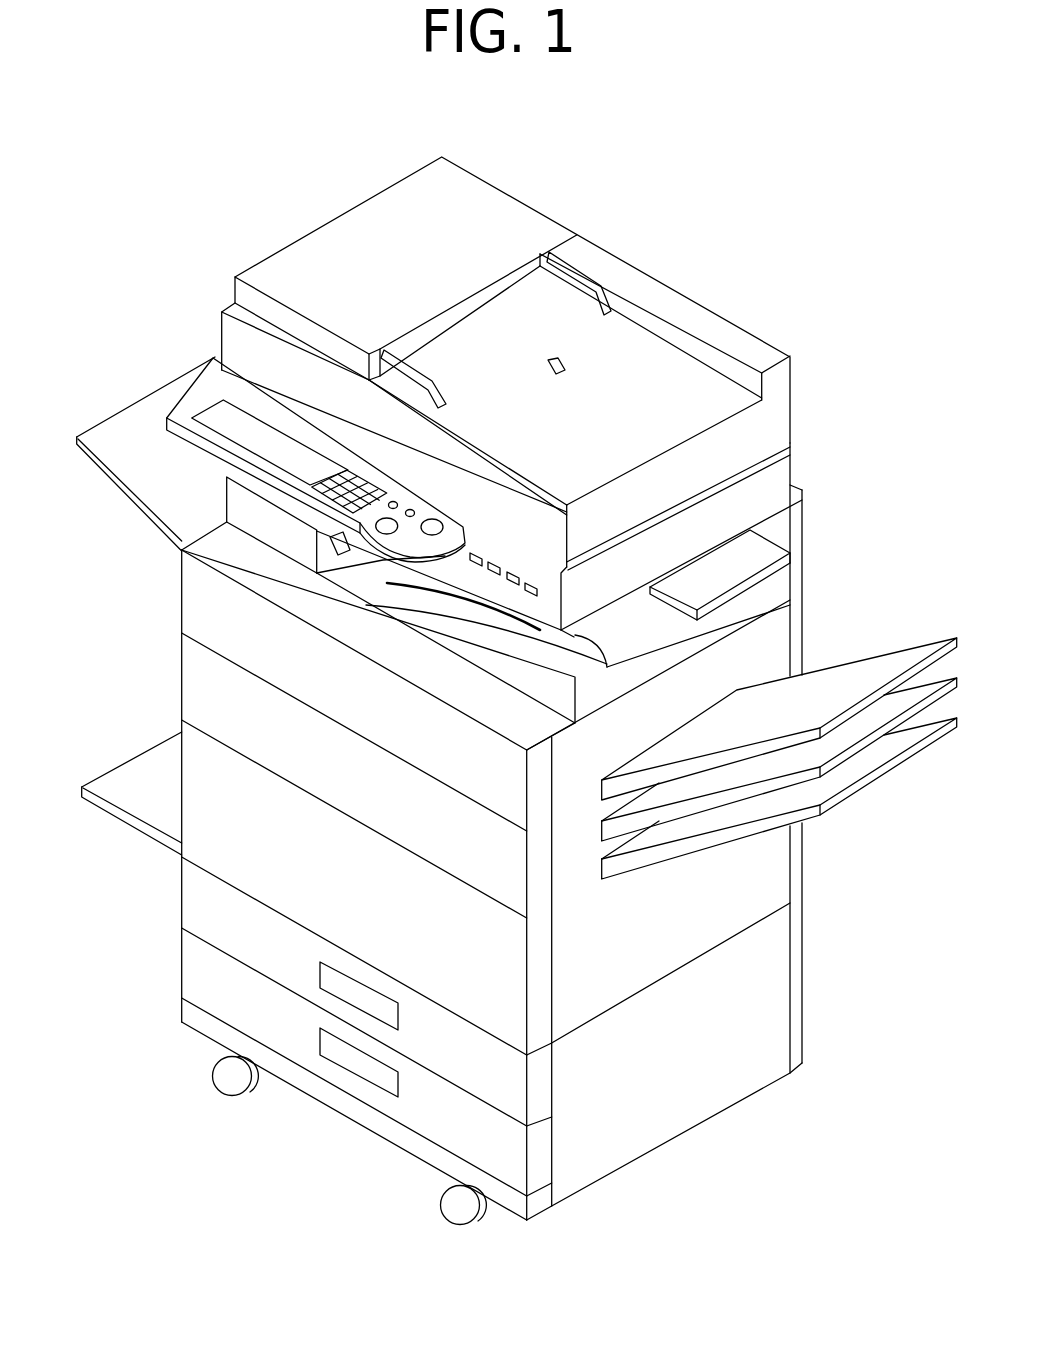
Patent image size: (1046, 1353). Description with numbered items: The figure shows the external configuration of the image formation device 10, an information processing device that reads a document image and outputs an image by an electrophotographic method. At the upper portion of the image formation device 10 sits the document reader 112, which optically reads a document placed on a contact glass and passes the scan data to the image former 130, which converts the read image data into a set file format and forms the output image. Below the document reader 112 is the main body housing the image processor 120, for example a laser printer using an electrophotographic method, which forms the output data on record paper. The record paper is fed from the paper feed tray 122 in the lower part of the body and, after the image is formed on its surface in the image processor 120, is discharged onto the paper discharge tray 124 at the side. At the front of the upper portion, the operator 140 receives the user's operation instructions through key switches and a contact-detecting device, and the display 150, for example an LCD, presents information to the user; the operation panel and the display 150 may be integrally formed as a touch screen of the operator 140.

The image formation device 10 is at (815, 255).
The document reader 112 is at (808, 438).
The image processor 120 is at (170, 677).
The image former 130 is at (439, 791).
The paper feed tray 122 is at (165, 967).
The paper discharge tray 124 is at (850, 632).
The operator 140 is at (347, 490).
The display 150 is at (233, 415).